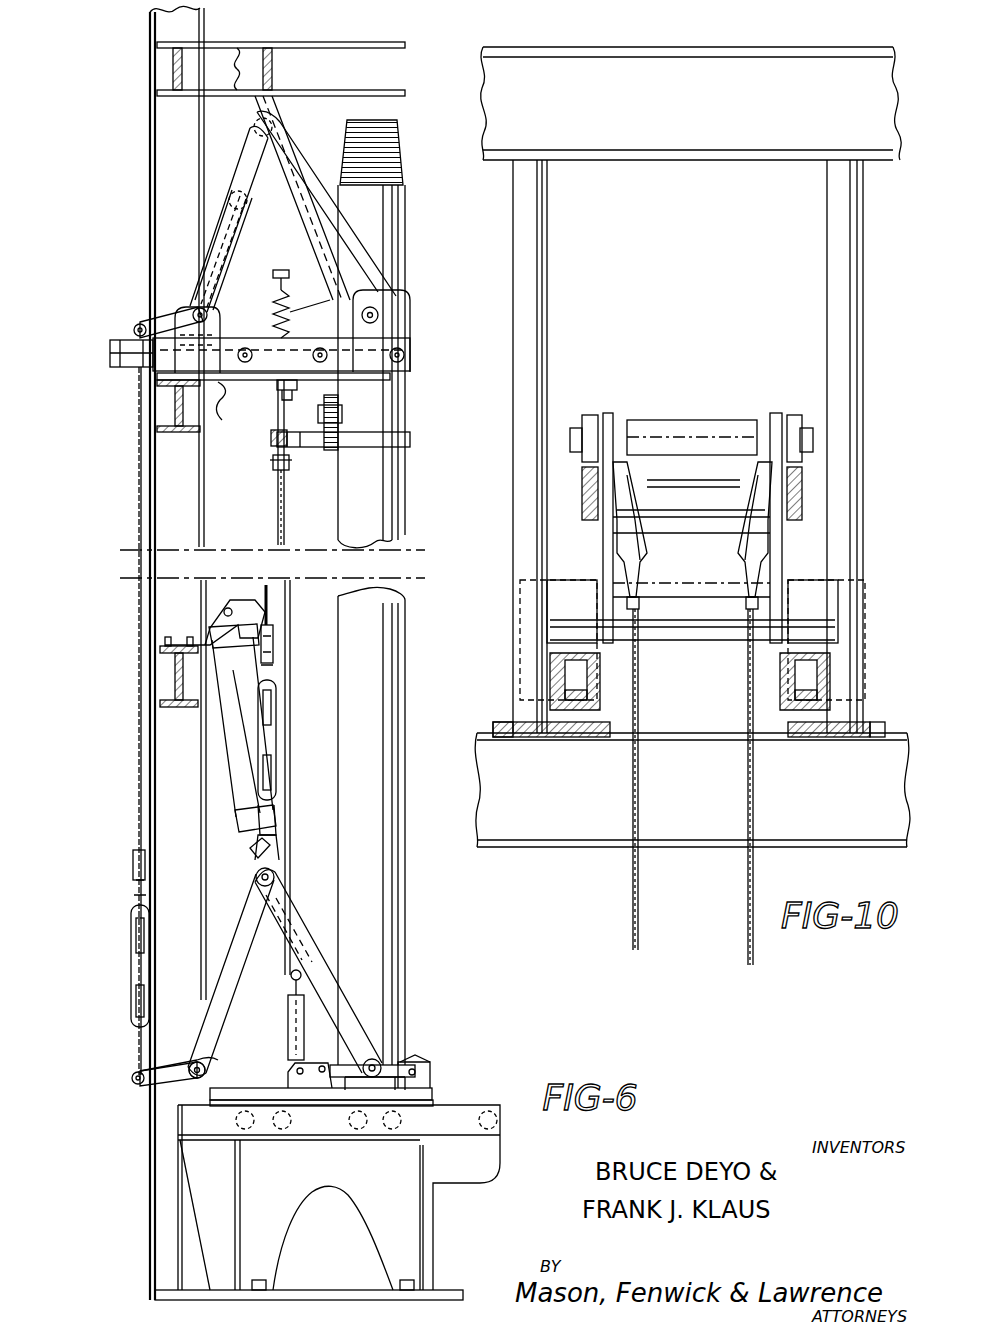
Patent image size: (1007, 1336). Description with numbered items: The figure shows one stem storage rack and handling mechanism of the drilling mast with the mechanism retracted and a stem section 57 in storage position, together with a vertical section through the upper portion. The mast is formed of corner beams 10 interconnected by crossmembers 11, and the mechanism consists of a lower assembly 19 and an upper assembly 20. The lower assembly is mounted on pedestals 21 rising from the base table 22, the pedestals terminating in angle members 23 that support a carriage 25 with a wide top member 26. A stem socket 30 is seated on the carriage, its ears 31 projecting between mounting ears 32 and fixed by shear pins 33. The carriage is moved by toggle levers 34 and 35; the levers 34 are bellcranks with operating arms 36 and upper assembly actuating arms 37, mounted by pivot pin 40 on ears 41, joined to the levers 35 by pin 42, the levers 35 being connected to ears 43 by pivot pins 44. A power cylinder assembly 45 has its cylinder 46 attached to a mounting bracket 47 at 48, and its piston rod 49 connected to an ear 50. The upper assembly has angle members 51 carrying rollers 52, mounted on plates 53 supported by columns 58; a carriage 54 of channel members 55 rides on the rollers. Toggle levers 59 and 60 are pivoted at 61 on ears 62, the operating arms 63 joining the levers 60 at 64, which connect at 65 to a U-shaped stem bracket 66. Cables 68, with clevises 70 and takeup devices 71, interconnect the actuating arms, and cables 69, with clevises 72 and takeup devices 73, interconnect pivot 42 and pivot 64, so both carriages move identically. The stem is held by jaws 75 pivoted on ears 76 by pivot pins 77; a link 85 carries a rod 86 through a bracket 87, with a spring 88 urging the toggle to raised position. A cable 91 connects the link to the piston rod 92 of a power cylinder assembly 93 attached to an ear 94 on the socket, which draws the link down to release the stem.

In FIG. 6, the corner beam 10 is at (150, 167).
In FIG. 6, the crossmember 11 is at (230, 48).
In FIG. 10, the crossmember 11 is at (722, 140).
In FIG. 6, the lower assembly 19 is at (188, 988).
In FIG. 6, the upper assembly 20 is at (204, 220).
In FIG. 10, the upper assembly 20 is at (812, 552).
In FIG. 6, the pedestal 21 is at (410, 1215).
In FIG. 6, the base table 22 is at (450, 1290).
In FIG. 6, the angle member 23 is at (470, 1125).
In FIG. 6, the carriage 25 is at (450, 1101).
In FIG. 6, the top member 26 is at (244, 1074).
In FIG. 6, the stem socket 30 is at (410, 1065).
In FIG. 6, the ear 31 is at (410, 1060).
In FIG. 6, the mounting ear 32 is at (432, 1080).
In FIG. 6, the shear pin 33 is at (292, 1076).
In FIG. 6, the toggle lever 34 is at (240, 925).
In FIG. 6, the toggle lever 35 is at (312, 920).
In FIG. 6, the operating arm 36 is at (228, 1009).
In FIG. 6, the upper assembly actuating arm 37 is at (170, 1060).
In FIG. 6, the pivot pin 40 is at (192, 1078).
In FIG. 6, the ear 41 is at (183, 1110).
In FIG. 6, the pin 42 is at (291, 856).
In FIG. 6, the ear 43 is at (356, 1090).
In FIG. 6, the pivot pin 44 is at (382, 1062).
In FIG. 6, the power cylinder assembly 45 is at (213, 737).
In FIG. 6, the cylinder 46 is at (235, 756).
In FIG. 6, the mounting bracket 47 is at (168, 632).
In FIG. 6, the pivotal attachment 48 is at (262, 603).
In FIG. 6, the piston rod 49 is at (248, 845).
In FIG. 6, the ear 50 is at (252, 864).
In FIG. 6, the angle member 51 is at (238, 342).
In FIG. 10, the angle member 51 is at (600, 738).
In FIG. 6, the roller 52 is at (312, 355).
In FIG. 10, the roller 52 is at (588, 700).
In FIG. 6, the plate 53 is at (228, 415).
In FIG. 10, the plate 53 is at (535, 740).
In FIG. 10, the carriage 54 is at (612, 677).
In FIG. 10, the channel member 55 is at (550, 660).
In FIG. 6, the stem section 57 is at (405, 482).
In FIG. 6, the column 58 is at (295, 152).
In FIG. 10, the column 58 is at (540, 296).
In FIG. 6, the toggle lever 59 is at (218, 250).
In FIG. 10, the toggle lever 59 is at (603, 553).
In FIG. 6, the toggle lever 60 is at (317, 188).
In FIG. 10, the toggle lever 60 is at (582, 500).
In FIG. 6, the pivot 61 is at (195, 305).
In FIG. 10, the pivot 61 is at (520, 607).
In FIG. 6, the ear 62 is at (110, 352).
In FIG. 6, the operating arm 63 is at (240, 182).
In FIG. 6, the pivot 64 is at (256, 122).
In FIG. 10, the pivot 64 is at (570, 440).
In FIG. 6, the pivot 65 is at (380, 315).
In FIG. 6, the stem bracket 66 is at (395, 330).
In FIG. 6, the cable 68 is at (137, 748).
In FIG. 6, the cable 69 is at (271, 610).
In FIG. 10, the cable 69 is at (745, 875).
In FIG. 6, the clevis 70 is at (134, 328).
In FIG. 6, the takeup device 71 is at (130, 924).
In FIG. 6, the clevis 72 is at (278, 140).
In FIG. 6, the takeup device 73 is at (272, 700).
In FIG. 10, the takeup device 73 is at (735, 568).
In FIG. 6, the jaw 75 is at (395, 436).
In FIG. 6, the ear 76 is at (345, 408).
In FIG. 6, the pivot pin 77 is at (330, 450).
In FIG. 6, the link 85 is at (273, 460).
In FIG. 6, the rod 86 is at (273, 294).
In FIG. 6, the bracket 87 is at (278, 392).
In FIG. 6, the spring 88 is at (330, 300).
In FIG. 6, the cable 91 is at (278, 541).
In FIG. 6, the piston rod 92 is at (291, 976).
In FIG. 6, the power cylinder assembly 93 is at (288, 1022).
In FIG. 6, the ear 94 is at (308, 1090).